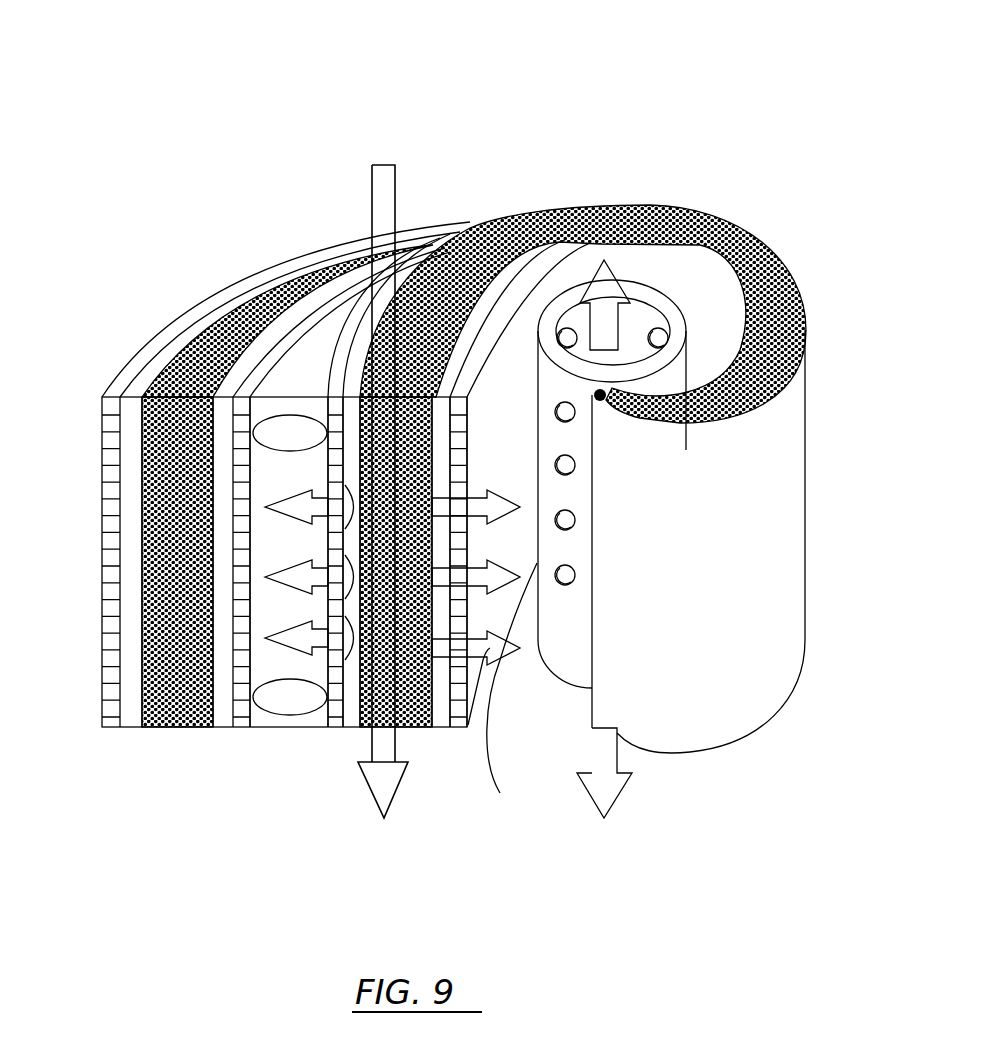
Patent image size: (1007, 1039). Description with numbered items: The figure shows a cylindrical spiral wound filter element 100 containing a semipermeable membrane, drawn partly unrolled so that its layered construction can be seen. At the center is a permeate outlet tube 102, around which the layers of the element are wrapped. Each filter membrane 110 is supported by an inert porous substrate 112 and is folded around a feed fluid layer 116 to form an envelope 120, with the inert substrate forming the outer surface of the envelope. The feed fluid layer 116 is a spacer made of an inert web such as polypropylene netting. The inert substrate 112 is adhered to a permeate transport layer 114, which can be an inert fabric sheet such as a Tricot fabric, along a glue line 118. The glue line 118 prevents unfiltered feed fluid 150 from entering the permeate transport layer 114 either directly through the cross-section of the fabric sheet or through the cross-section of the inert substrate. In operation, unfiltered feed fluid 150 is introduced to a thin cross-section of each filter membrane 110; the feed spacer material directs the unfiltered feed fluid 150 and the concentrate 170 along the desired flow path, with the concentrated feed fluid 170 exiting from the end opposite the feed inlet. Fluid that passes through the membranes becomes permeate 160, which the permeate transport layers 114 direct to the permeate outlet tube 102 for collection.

The spiral wound filter element 100 is at (490, 150).
The permeate outlet tube 102 is at (670, 308).
The filter membrane 110 is at (352, 718).
The inert porous substrate 112 is at (337, 392).
The permeate transport layer 114 is at (277, 477).
The feed fluid layer 116 is at (165, 655).
The glue line 118 is at (282, 415).
The envelope 120 is at (250, 730).
The unfiltered feed fluid 150 is at (372, 202).
The permeate 160 is at (590, 780).
The concentrated feed fluid 170 is at (390, 790).